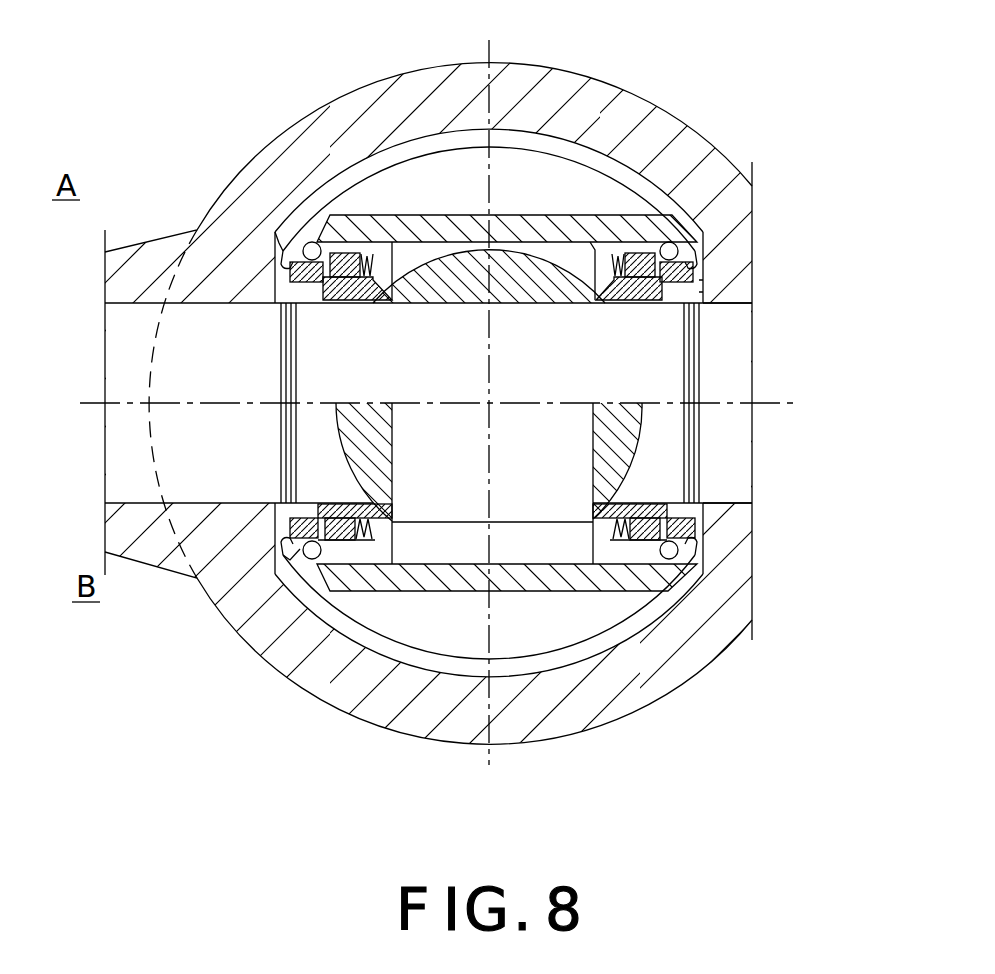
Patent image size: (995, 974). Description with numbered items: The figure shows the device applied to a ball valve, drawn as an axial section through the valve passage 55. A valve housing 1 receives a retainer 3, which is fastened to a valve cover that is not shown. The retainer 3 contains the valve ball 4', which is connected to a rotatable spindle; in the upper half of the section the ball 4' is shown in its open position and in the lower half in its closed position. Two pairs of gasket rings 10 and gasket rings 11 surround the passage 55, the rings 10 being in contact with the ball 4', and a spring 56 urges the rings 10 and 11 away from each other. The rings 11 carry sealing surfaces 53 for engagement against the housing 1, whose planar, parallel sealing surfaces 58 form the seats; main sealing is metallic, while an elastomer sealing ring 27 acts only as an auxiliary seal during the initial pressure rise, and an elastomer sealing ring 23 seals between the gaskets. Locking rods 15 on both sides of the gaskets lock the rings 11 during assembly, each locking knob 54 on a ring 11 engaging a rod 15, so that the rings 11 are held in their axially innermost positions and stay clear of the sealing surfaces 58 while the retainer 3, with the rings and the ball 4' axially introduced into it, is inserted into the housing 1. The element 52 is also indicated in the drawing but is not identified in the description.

The valve housing 1 is at (153, 247).
The retainer 3 is at (647, 217).
The valve ball 4' is at (507, 400).
The gasket rings 10 is at (578, 268).
The gasket rings 11 is at (360, 262).
The locking rods 15 is at (298, 243).
The elastomer sealing ring 23 is at (357, 560).
The elastomer sealing ring 27 is at (702, 299).
The seal ring 52 is at (700, 273).
The sealing surfaces 53 is at (700, 290).
The locking knob 54 is at (326, 242).
The passage 55 is at (722, 437).
The spring 56 is at (374, 262).
The sealing surfaces 58 is at (703, 528).